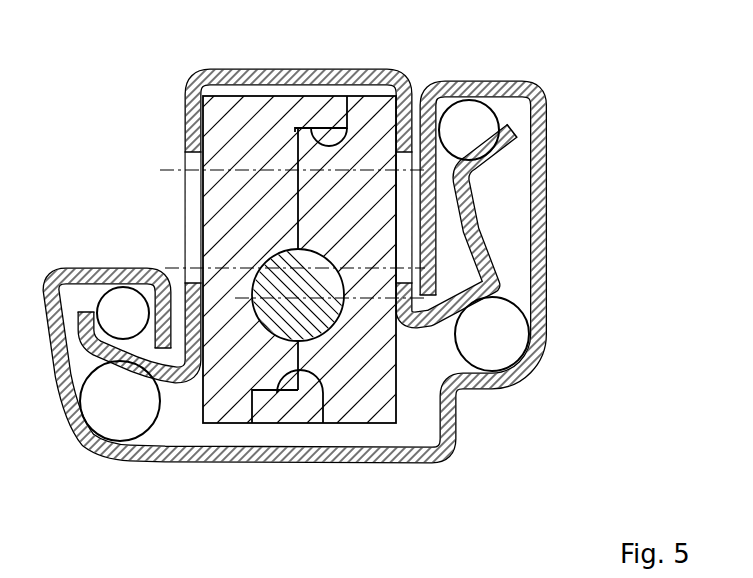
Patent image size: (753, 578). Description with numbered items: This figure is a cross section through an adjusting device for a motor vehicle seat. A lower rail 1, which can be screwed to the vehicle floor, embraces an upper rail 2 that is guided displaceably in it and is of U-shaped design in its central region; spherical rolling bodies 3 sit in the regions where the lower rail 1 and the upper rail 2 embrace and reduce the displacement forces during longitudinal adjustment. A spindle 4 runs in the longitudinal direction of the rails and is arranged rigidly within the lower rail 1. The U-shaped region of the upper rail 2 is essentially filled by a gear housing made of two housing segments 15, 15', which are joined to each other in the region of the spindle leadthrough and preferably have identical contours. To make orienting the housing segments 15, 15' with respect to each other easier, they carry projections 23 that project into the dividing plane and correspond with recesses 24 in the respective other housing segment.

The lower rail 1 is at (348, 460).
The upper rail 2 is at (232, 69).
The spherical rolling bodies 3 is at (102, 418).
The spindle 4 is at (283, 316).
The housing segment 15 is at (165, 457).
The housing segment 15' is at (397, 467).
The projections 23 is at (272, 407).
The recesses 24 is at (322, 392).